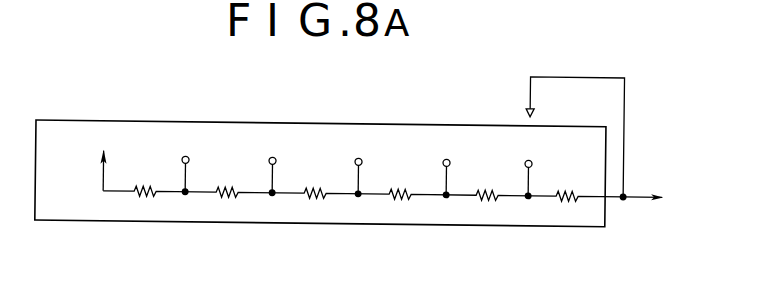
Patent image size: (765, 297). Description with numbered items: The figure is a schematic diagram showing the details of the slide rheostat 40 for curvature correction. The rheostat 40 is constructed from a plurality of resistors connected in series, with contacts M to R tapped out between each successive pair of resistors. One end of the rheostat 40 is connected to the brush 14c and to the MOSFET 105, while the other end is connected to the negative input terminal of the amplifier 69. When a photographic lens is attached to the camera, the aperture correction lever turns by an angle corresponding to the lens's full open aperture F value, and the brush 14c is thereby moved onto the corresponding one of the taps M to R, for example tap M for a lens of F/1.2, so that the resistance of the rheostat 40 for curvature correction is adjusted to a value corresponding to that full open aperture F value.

The slide rheostat for curvature correction 40 is at (330, 150).
The brush 14c is at (530, 87).
The amplifier 69 is at (81, 169).
The MOSFET 105 is at (643, 210).